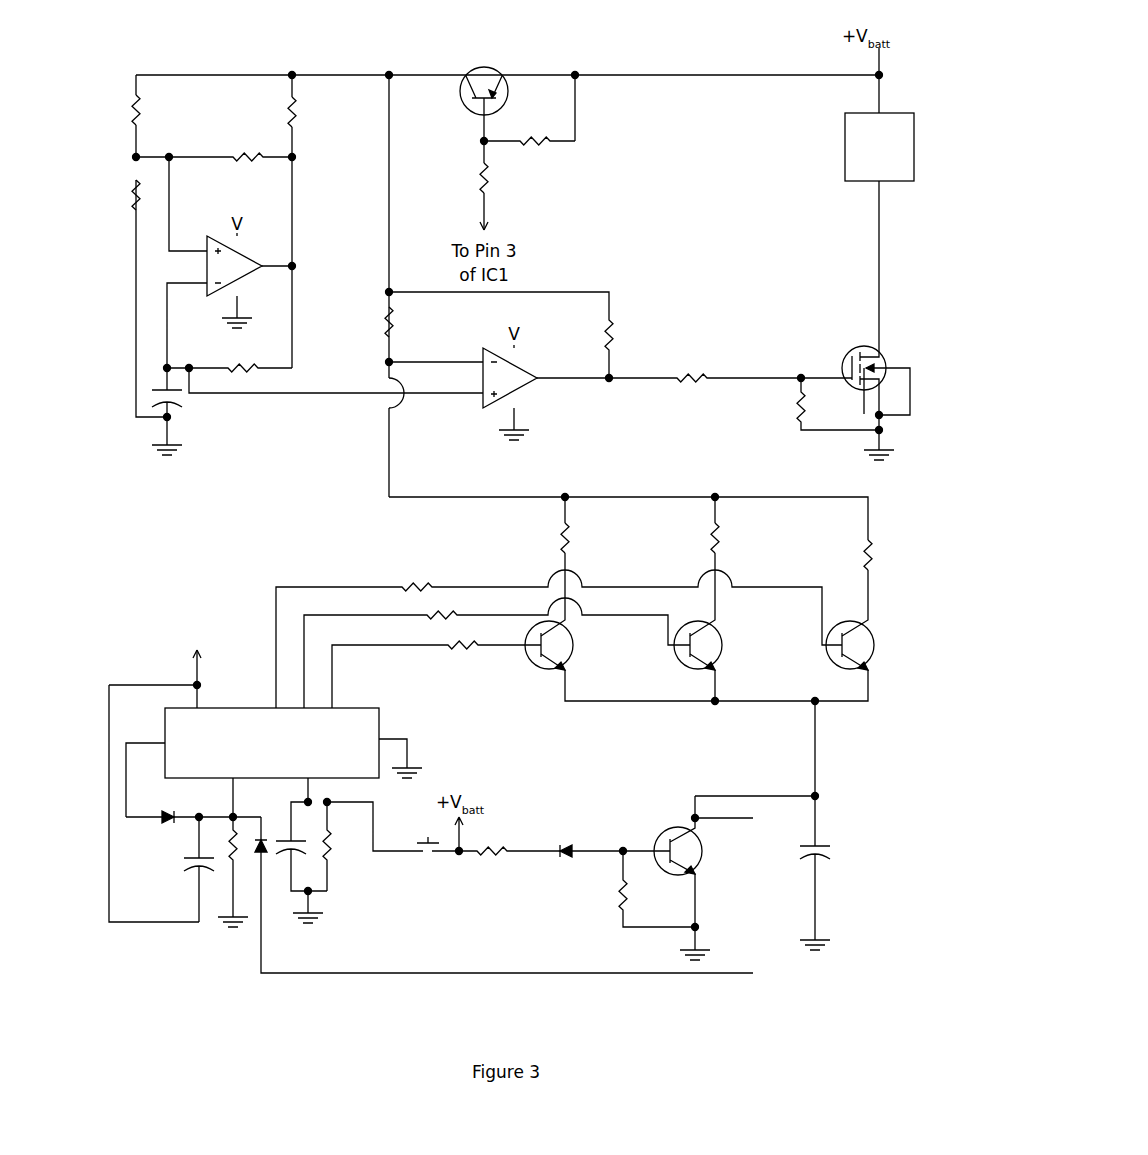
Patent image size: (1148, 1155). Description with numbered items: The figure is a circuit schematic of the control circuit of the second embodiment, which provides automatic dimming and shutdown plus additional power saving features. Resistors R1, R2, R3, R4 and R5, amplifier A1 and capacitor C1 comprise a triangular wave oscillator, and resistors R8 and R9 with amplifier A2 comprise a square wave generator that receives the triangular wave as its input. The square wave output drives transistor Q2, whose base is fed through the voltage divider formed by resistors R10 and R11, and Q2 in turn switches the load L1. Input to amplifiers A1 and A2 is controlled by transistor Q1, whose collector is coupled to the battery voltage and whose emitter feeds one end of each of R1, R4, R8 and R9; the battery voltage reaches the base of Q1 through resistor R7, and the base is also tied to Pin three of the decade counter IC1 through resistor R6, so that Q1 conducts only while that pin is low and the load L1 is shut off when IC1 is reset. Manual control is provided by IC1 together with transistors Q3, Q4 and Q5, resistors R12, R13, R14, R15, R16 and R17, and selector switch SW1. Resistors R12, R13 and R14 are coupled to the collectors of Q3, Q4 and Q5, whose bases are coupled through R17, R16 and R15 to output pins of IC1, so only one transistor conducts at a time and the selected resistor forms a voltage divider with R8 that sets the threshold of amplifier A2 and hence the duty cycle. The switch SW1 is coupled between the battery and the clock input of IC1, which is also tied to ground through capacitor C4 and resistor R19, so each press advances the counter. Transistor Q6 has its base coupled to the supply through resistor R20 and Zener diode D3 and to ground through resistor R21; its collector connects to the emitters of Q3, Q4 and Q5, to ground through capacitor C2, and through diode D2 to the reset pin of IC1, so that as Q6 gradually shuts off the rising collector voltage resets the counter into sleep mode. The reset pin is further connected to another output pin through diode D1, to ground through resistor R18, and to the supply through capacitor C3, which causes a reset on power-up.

The resistor R1 is at (120, 110).
The resistor R2 is at (120, 195).
The resistor R3 is at (214, 145).
The resistor R4 is at (308, 112).
The resistor R5 is at (229, 358).
The resistor R6 is at (470, 178).
The resistor R7 is at (529, 130).
The resistor R8 is at (373, 322).
The resistor R9 is at (517, 335).
The resistor R10 is at (705, 365).
The resistor R11 is at (817, 404).
The resistor R12 is at (543, 538).
The resistor R13 is at (689, 540).
The resistor R14 is at (846, 555).
The resistor R15 is at (559, 635).
The resistor R16 is at (497, 650).
The resistor R17 is at (436, 665).
The resistor R18 is at (236, 862).
The resistor R19 is at (373, 846).
The resistor R20 is at (509, 865).
The resistor R21 is at (637, 889).
The capacitor C1 is at (317, 411).
The capacitor C2 is at (830, 873).
The capacitor C3 is at (182, 869).
The capacitor C4 is at (297, 850).
The diode D1 is at (193, 806).
The diode D2 is at (266, 838).
The Zener diode D3 is at (590, 839).
The transistor Q1 is at (484, 94).
The transistor Q2 is at (855, 320).
The transistor Q3 is at (564, 645).
The transistor Q4 is at (714, 645).
The transistor Q5 is at (866, 645).
The transistor Q6 is at (719, 878).
The amplifier A1 is at (247, 277).
The amplifier A2 is at (522, 388).
The 4017B decade counter IC1 is at (379, 724).
The load L1 is at (845, 146).
The selector switch SW1 is at (433, 860).